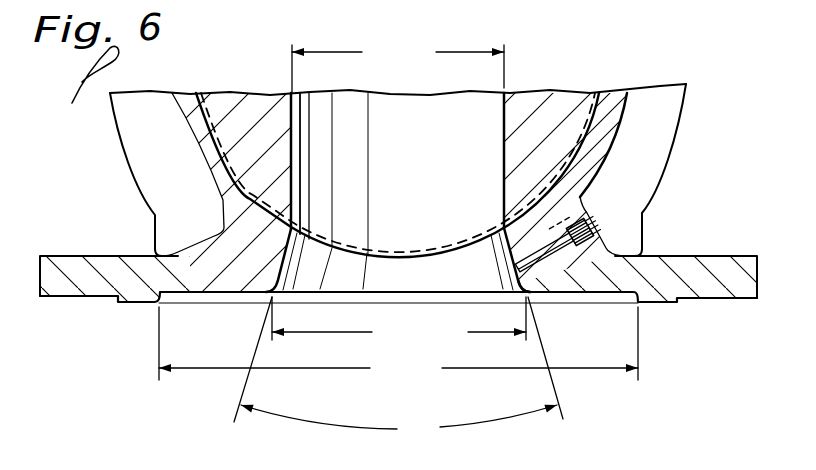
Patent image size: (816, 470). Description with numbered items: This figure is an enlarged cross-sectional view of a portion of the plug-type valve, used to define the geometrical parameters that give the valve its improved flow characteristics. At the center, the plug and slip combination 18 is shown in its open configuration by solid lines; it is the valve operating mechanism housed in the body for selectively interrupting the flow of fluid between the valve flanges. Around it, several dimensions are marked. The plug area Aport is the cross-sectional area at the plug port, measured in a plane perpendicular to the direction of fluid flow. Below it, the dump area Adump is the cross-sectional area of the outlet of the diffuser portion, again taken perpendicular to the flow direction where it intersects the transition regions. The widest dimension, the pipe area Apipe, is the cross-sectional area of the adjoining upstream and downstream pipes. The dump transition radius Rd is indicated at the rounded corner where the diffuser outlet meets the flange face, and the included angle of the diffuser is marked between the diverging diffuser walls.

The plug and slip combination 18 is at (242, 107).
The plug area Aport is at (398, 65).
The dump area Adump is at (399, 323).
The pipe area Apipe is at (398, 346).
The dump transition radius Rd is at (533, 287).